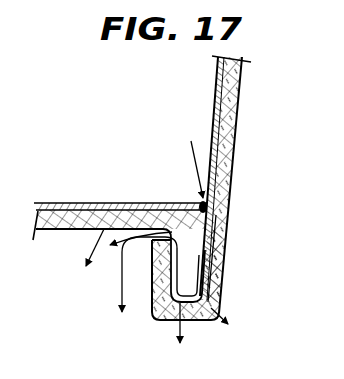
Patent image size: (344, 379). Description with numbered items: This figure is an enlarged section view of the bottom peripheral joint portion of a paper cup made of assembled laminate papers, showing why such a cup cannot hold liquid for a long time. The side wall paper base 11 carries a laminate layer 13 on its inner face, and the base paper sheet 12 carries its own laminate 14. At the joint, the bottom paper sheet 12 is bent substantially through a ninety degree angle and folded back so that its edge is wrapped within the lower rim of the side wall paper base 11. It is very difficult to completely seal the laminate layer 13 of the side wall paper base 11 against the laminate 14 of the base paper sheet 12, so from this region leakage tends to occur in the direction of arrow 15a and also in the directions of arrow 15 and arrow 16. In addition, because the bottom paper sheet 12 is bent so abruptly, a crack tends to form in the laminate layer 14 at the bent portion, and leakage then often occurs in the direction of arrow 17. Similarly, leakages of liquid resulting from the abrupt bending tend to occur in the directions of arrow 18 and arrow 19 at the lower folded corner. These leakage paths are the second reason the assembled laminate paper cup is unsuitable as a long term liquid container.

The side wall paper base 11 is at (241, 99).
The base paper sheet 12 is at (51, 231).
The laminate layer 13 is at (217, 105).
The laminate 14 is at (72, 204).
The arrow 15 is at (188, 152).
The arrow 15a is at (127, 296).
The arrow 16 is at (98, 258).
The arrow 17 is at (193, 200).
The arrow 18 is at (236, 293).
The arrow 19 is at (185, 334).